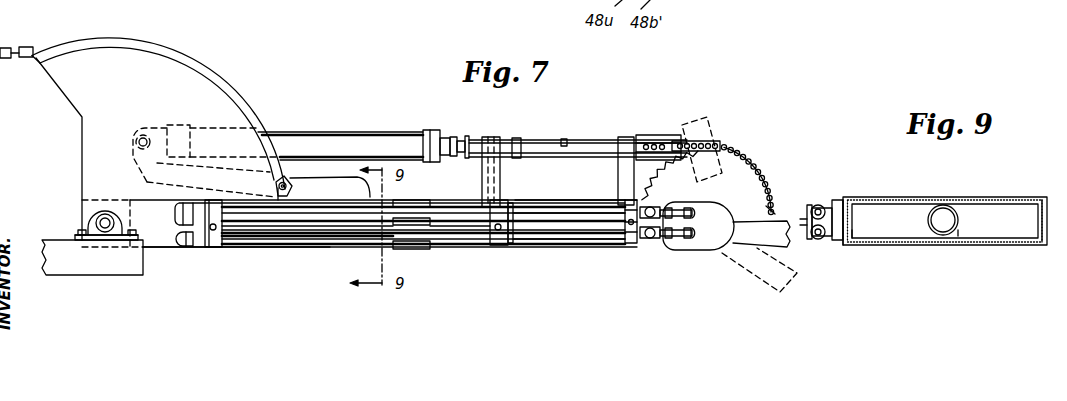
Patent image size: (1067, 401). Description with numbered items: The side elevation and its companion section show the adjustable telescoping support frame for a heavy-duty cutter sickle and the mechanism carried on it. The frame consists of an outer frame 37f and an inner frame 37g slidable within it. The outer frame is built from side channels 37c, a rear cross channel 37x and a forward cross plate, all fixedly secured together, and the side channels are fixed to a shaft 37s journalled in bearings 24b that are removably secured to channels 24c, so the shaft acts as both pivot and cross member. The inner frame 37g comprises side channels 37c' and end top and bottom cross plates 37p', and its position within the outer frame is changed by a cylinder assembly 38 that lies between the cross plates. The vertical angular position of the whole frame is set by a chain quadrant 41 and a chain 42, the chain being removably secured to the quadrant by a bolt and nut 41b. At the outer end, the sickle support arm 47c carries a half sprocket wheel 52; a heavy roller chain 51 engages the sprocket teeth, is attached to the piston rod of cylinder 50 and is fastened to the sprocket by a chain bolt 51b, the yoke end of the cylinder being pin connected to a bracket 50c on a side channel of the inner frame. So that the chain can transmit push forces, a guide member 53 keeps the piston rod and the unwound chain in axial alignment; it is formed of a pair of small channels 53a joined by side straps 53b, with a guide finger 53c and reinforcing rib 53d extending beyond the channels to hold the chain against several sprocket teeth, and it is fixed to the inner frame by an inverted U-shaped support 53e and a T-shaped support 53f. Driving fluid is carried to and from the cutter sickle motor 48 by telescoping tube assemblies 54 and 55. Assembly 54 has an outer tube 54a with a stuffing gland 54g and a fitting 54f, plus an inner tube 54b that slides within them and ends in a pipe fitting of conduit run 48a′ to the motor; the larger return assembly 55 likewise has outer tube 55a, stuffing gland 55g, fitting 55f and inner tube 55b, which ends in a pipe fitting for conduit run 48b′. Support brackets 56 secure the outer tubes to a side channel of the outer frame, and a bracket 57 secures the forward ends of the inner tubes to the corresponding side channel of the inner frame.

In FIG. 7, the chain 42 is at (4, 48).
In FIG. 7, the chain quadrant 41 is at (195, 69).
In FIG. 7, the bolt and nut 41b is at (286, 182).
In FIG. 7, the cylinder 50 is at (284, 131).
In FIG. 7, the bracket 50c is at (320, 183).
In FIG. 7, the rear cross channel 37x is at (100, 195).
In FIG. 9, the rear cross channel 37x is at (1013, 197).
In FIG. 7, the shaft 37s is at (93, 222).
In FIG. 7, the channels 24c is at (68, 265).
In FIG. 7, the bearings 24b is at (116, 237).
In FIG. 7, the outer frame 37f is at (160, 249).
In FIG. 9, the outer frame 37f is at (838, 190).
In FIG. 7, the telescoping tube assembly 55 is at (458, 184).
In FIG. 7, the fitting 55f is at (180, 213).
In FIG. 7, the outer tube 55a is at (333, 224).
In FIG. 7, the stuffing gland 55g is at (513, 200).
In FIG. 7, the inner tube 55b is at (570, 243).
In FIG. 7, the inner frame 37g is at (587, 197).
In FIG. 9, the inner frame 37g is at (854, 230).
In FIG. 7, the telescoping tube assembly 54 is at (453, 249).
In FIG. 7, the fitting 54f is at (183, 243).
In FIG. 7, the outer tube 54a is at (261, 236).
In FIG. 7, the stuffing gland 54g is at (508, 246).
In FIG. 7, the inner tube 54b is at (540, 242).
In FIG. 7, the support brackets 56 is at (215, 238).
In FIG. 9, the support brackets 56 is at (806, 212).
In FIG. 7, the bracket 57 is at (630, 243).
In FIG. 7, the guide member 53 is at (542, 132).
In FIG. 7, the T-shaped support 53f is at (487, 137).
In FIG. 7, the small channels 53a is at (520, 139).
In FIG. 7, the side straps 53b is at (564, 140).
In FIG. 7, the inverted U-shaped support 53e is at (625, 143).
In FIG. 7, the reinforcing rib 53d is at (657, 138).
In FIG. 7, the guide finger 53c is at (700, 141).
In FIG. 7, the roller chain 51 is at (737, 177).
In FIG. 7, the chain bolt 51b is at (766, 205).
In FIG. 7, the half sprocket wheel 52 is at (760, 173).
In FIG. 7, the cutter sickle motor 48 is at (711, 235).
In FIG. 7, the conduit run 48b′ is at (657, 214).
In FIG. 7, the conduit run 48a′ is at (697, 241).
In FIG. 7, the sickle support arm 47c is at (770, 238).
In FIG. 9, the cylinder assembly 38 is at (929, 219).
In FIG. 9, the end top and bottom cross plates 37p' is at (986, 225).
In FIG. 9, the side channels 37c is at (863, 243).
In FIG. 9, the side channels 37c' is at (1026, 243).